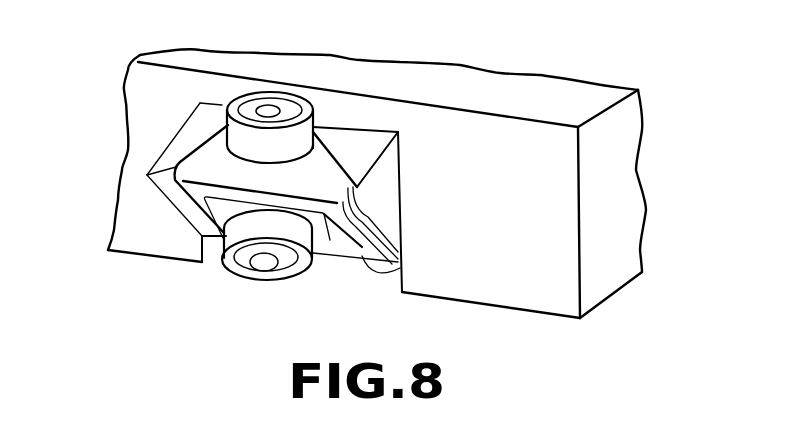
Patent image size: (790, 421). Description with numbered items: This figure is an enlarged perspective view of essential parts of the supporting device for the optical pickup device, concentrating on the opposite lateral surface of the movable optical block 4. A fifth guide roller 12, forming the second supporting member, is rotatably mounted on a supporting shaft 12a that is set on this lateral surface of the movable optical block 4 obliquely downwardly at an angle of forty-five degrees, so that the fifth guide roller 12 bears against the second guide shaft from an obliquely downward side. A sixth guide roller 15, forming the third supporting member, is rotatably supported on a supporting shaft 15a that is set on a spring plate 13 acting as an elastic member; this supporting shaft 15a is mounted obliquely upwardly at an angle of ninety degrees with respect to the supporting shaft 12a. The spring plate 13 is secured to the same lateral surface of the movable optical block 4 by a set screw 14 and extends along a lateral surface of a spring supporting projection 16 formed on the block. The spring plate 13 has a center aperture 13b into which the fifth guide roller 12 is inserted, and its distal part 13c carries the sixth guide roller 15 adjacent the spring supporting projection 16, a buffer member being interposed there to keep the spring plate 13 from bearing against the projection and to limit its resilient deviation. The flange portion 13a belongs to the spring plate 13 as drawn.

The movable optical block 4 is at (615, 295).
The fifth guide roller 12 is at (292, 278).
The supporting shaft 12a is at (263, 267).
The spring plate 13 is at (205, 144).
The flange of bracket 13a is at (178, 230).
The center aperture 13b is at (343, 253).
The distal part of the spring plate 13c is at (158, 167).
The set screw 14 is at (383, 277).
The sixth guide roller 15 is at (302, 138).
The supporting shaft 15a is at (267, 108).
The spring supporting projection 16 is at (393, 198).